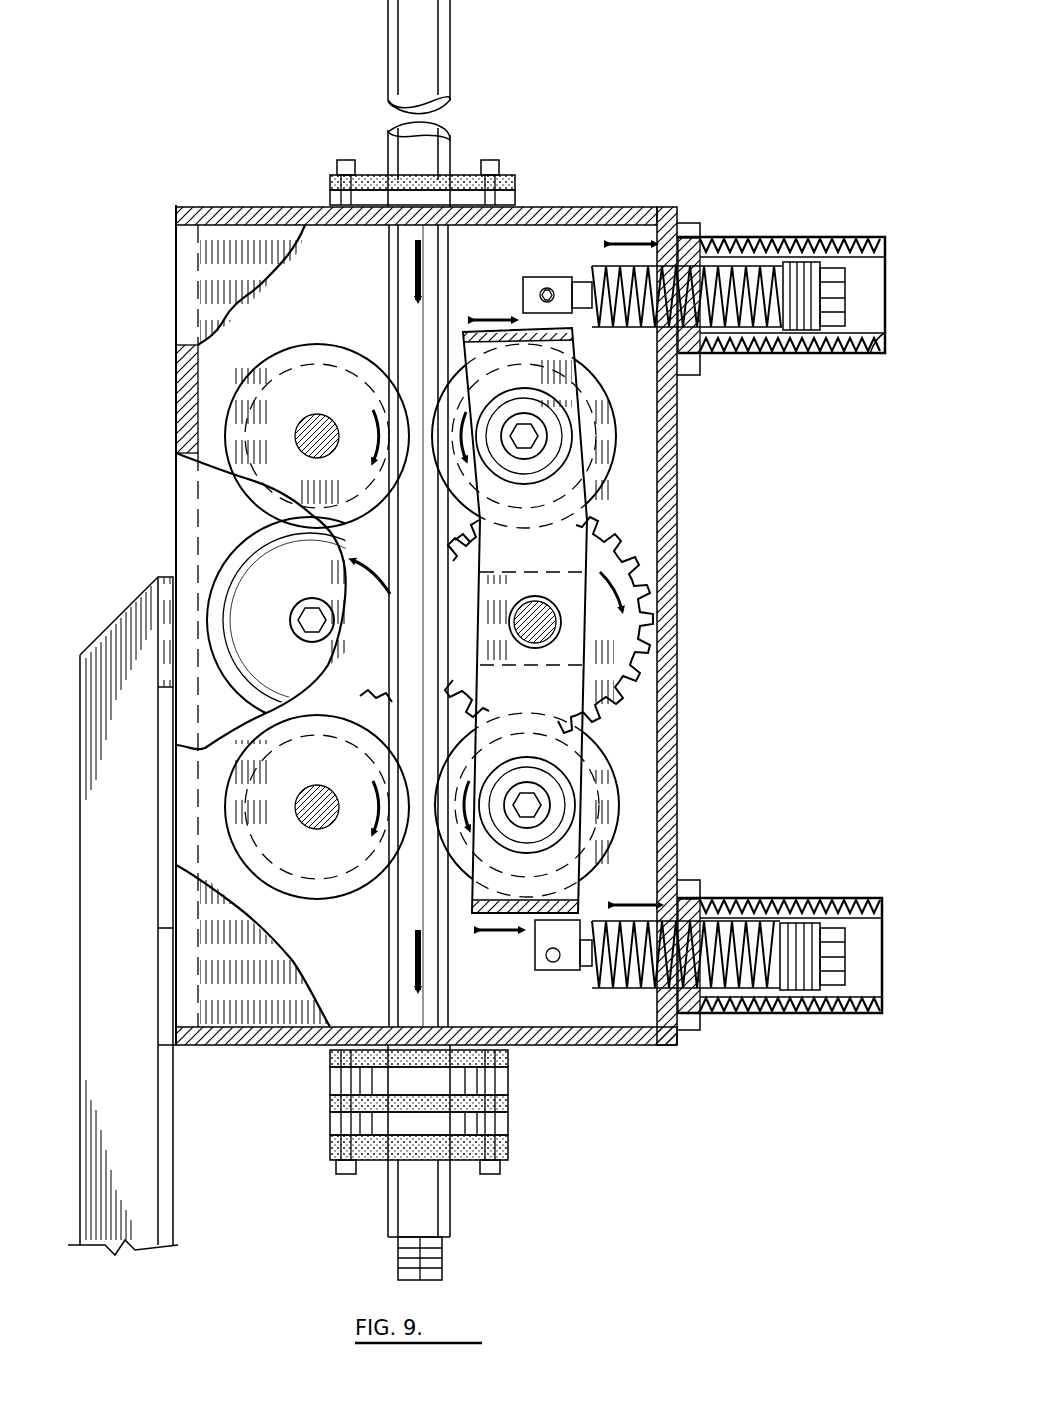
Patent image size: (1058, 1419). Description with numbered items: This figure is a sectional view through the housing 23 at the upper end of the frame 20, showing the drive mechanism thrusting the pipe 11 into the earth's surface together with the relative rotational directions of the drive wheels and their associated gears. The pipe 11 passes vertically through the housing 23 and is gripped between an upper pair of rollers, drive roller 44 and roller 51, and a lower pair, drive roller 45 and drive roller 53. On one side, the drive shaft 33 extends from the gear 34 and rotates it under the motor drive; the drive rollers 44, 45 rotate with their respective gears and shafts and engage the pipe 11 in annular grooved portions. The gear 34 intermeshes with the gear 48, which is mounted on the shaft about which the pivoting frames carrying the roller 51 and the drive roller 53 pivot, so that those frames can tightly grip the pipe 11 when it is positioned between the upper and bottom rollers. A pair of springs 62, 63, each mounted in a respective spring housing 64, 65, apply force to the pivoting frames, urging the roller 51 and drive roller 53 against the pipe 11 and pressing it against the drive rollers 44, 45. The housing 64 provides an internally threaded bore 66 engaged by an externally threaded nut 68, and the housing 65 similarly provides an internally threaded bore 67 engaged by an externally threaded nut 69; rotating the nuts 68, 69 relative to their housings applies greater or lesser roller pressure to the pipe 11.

The pipe 11 is at (440, 72).
The frame 20 is at (150, 809).
The housing 23 is at (176, 410).
The drive shaft 33 is at (302, 607).
The gear 34 is at (388, 687).
The drive roller 44 is at (345, 345).
The drive roller 45 is at (352, 895).
The gear 48 is at (640, 606).
The roller 51 is at (620, 438).
The drive roller 53 is at (618, 815).
The spring 62 is at (722, 262).
The spring 63 is at (730, 990).
The spring housing 64 is at (762, 255).
The spring housing 65 is at (758, 905).
The internally threaded bore 66 is at (870, 345).
The internally threaded bore 67 is at (875, 925).
The externally threaded nut 68 is at (836, 298).
The externally threaded nut 69 is at (838, 958).